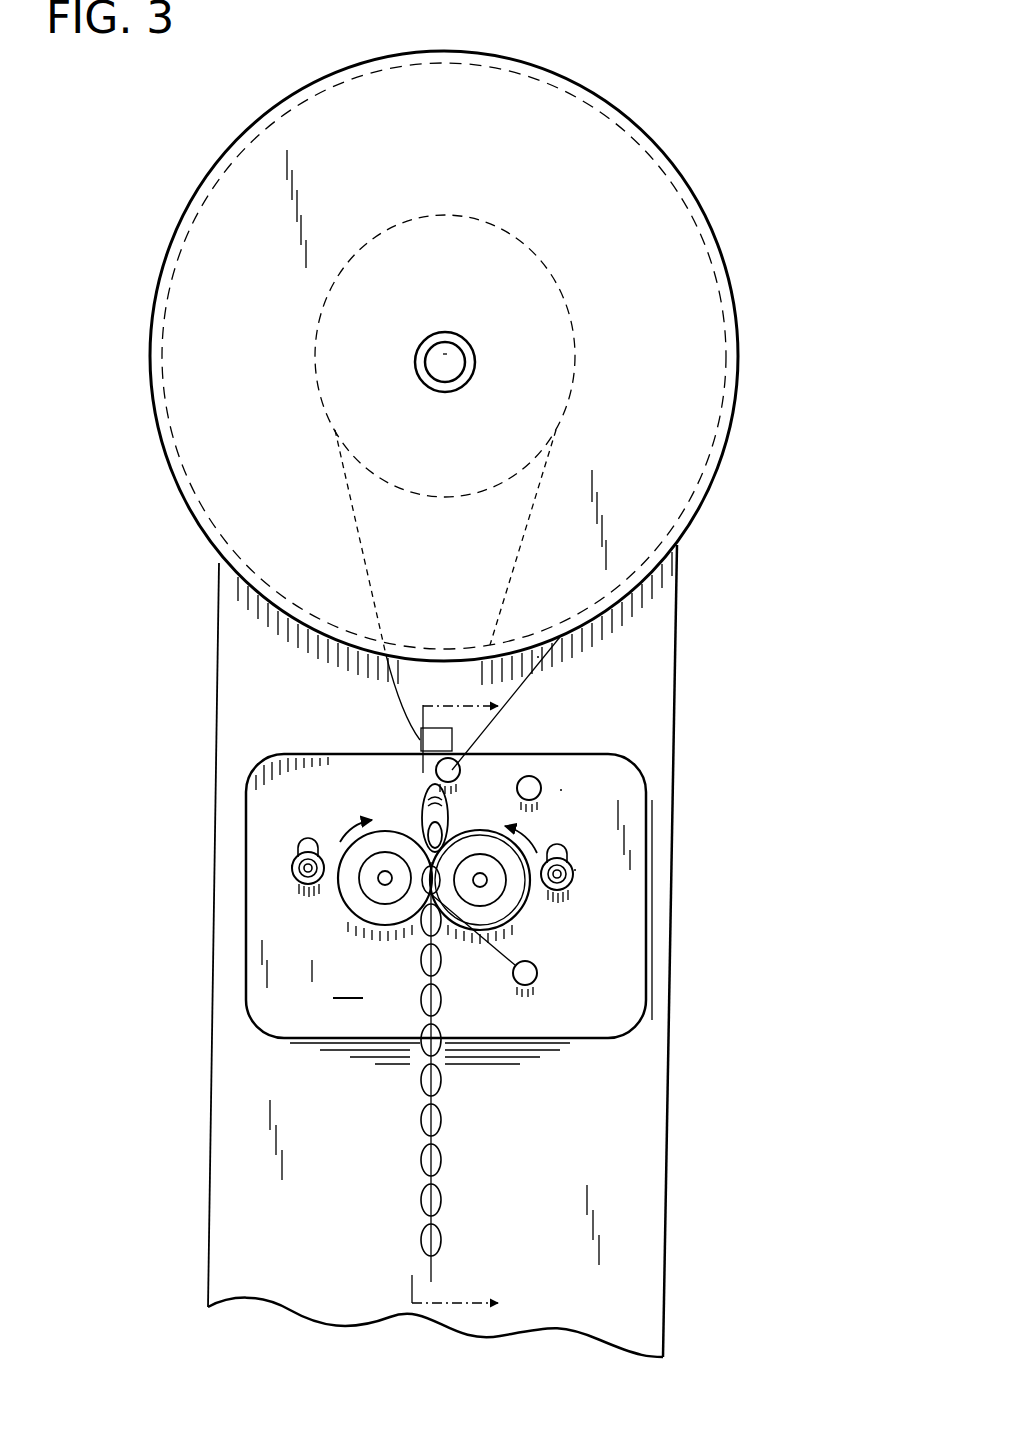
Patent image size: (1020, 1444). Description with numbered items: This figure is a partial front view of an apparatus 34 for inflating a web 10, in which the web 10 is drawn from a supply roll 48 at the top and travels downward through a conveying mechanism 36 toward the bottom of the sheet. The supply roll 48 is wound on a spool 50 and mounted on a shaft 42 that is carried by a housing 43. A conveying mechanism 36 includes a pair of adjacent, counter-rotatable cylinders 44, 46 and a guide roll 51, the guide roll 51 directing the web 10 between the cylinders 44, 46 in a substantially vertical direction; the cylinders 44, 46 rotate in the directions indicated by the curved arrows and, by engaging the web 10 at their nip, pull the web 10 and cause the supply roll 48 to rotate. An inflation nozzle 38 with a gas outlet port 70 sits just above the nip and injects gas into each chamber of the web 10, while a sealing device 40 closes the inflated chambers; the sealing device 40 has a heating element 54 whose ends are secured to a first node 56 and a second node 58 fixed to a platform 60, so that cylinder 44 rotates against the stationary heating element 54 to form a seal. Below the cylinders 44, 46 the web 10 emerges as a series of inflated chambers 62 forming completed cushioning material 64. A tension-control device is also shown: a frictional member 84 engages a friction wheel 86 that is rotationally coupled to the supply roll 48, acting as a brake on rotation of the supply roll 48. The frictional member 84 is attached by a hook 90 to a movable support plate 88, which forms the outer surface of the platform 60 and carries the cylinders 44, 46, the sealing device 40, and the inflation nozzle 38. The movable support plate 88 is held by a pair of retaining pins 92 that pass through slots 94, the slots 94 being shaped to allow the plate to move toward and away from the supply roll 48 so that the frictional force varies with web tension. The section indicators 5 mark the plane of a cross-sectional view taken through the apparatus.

The web 10 is at (538, 656).
The apparatus 34 is at (732, 146).
The conveying mechanism 36 is at (760, 527).
The inflation nozzle 38 is at (423, 806).
The sealing device 40 is at (562, 790).
The shaft 42 is at (446, 356).
The housing 43 is at (678, 757).
The cylinder 44 is at (510, 905).
The cylinder 46 is at (355, 905).
The supply roll 48 is at (731, 258).
The spool 50 is at (415, 357).
The guide roll 51 is at (455, 766).
The heating element 54 is at (492, 957).
The first node 56 is at (533, 778).
The second node 58 is at (538, 972).
The platform 60 is at (557, 1022).
The inflated chambers 62 is at (420, 1078).
The completed cushioning material 64 is at (444, 1162).
The gas outlet port 70 is at (446, 824).
The frictional member 84 is at (393, 693).
The friction wheel 86 is at (315, 320).
The movable support plate 88 is at (443, 877).
The hook 90 is at (420, 746).
The retaining pins 92 is at (293, 866).
The slots 94 is at (306, 848).
The section line 5- 5 is at (486, 1005).